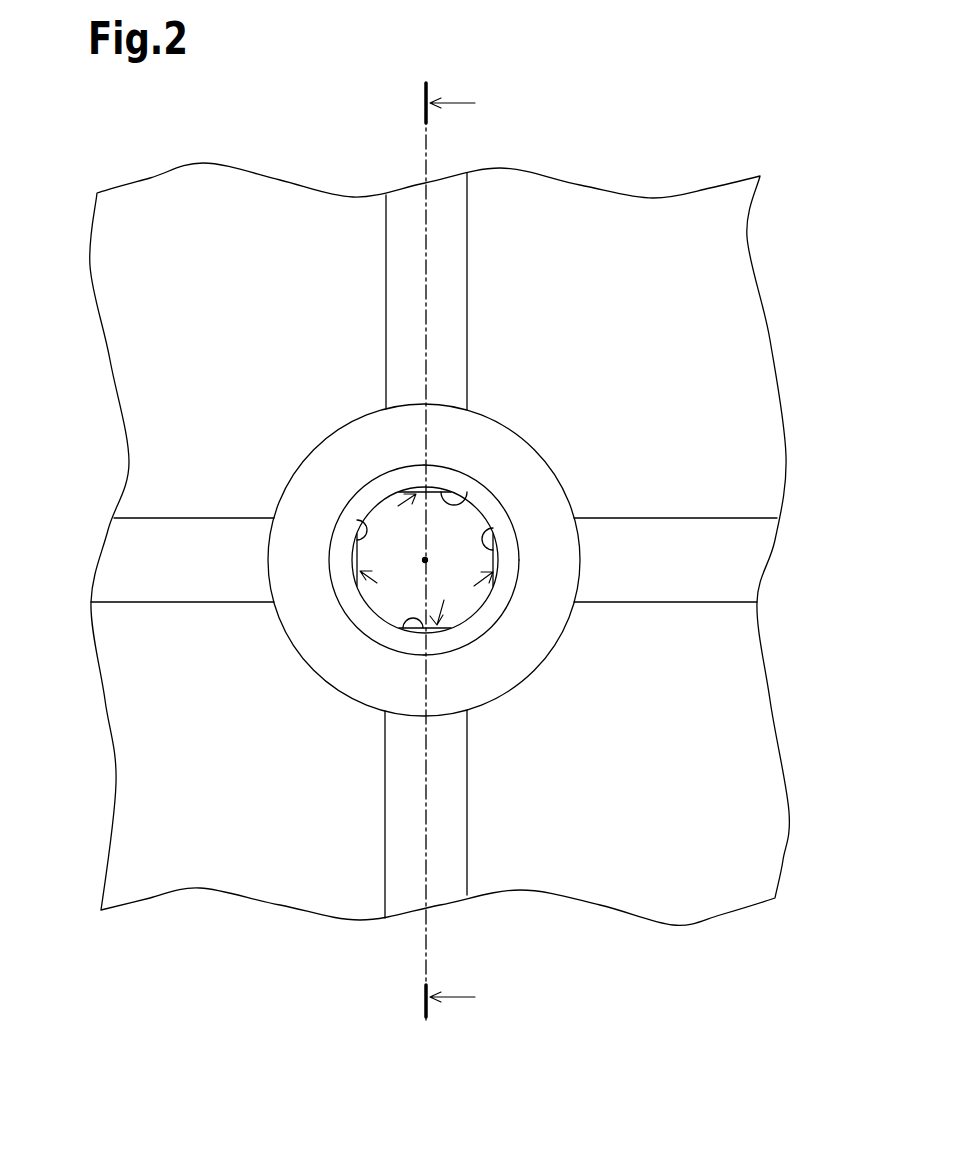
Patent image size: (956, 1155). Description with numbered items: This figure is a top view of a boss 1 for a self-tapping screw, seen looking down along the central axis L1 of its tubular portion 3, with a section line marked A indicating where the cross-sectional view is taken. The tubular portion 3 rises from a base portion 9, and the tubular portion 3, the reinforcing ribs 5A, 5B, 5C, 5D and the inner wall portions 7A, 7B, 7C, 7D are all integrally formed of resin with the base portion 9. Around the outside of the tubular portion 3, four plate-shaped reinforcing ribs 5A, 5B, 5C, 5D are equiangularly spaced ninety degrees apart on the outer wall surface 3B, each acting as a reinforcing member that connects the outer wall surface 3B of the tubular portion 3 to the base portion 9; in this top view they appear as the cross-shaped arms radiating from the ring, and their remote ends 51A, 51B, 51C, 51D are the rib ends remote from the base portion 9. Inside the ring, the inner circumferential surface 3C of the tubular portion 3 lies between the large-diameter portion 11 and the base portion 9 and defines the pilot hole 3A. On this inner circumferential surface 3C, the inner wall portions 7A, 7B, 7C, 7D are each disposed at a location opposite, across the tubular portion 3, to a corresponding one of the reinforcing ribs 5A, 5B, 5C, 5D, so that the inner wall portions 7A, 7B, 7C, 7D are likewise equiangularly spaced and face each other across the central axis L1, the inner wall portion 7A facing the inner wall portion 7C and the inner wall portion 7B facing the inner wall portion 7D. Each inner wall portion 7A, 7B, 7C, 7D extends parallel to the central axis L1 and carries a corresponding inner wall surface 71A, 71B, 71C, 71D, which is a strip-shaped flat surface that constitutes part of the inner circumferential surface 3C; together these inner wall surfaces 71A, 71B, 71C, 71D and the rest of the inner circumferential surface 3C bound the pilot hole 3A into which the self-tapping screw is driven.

The boss 1 is at (565, 313).
The tubular portion 3 is at (563, 456).
The pilot hole 3A is at (340, 626).
The outer wall surface 3B is at (568, 628).
The inner circumferential surface 3C is at (478, 497).
The reinforcing rib 5A is at (705, 518).
The reinforcing rib 5B is at (470, 838).
The reinforcing rib 5C is at (143, 604).
The reinforcing rib 5D is at (386, 262).
The remote end 51A is at (717, 592).
The remote end 51B is at (400, 860).
The remote end 51C is at (147, 517).
The remote end 51D is at (450, 233).
The inner wall portion 7A is at (474, 586).
The inner wall portion 7B is at (444, 600).
The inner wall portion 7C is at (377, 583).
The inner wall portion 7D is at (398, 506).
The inner wall surface 71A is at (497, 540).
The inner wall surface 71B is at (417, 630).
The inner wall surface 71C is at (370, 522).
The inner wall surface 71D is at (470, 495).
The base portion 9 is at (215, 855).
The large-diameter portion 11 is at (511, 568).
The central axis L1 is at (425, 560).
The section line A is at (461, 551).